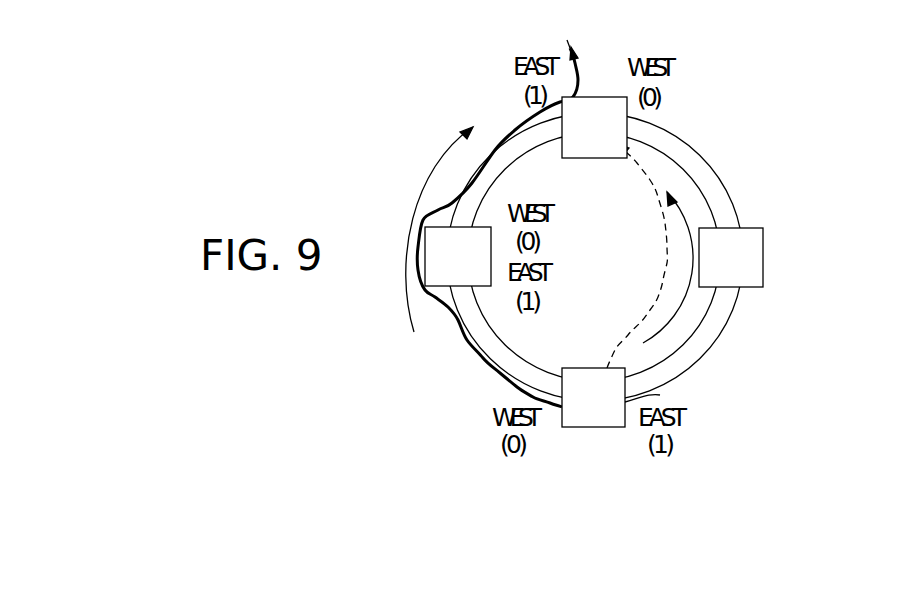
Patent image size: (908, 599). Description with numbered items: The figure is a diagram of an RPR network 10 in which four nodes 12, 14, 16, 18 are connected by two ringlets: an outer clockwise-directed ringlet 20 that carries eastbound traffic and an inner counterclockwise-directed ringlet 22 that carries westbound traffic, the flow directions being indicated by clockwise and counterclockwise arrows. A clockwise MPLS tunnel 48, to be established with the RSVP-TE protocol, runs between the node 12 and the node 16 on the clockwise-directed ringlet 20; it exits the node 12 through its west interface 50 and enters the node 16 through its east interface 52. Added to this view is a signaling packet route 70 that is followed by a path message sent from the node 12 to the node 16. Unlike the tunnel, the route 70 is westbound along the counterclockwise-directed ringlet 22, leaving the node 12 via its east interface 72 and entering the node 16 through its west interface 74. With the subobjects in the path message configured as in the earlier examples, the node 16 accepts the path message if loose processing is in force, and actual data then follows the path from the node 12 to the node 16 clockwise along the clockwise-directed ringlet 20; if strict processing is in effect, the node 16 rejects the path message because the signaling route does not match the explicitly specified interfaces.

The RPR network 10 is at (630, 261).
The node 12 is at (593, 397).
The node 14 is at (458, 256).
The node 16 is at (594, 127).
The node 18 is at (731, 257).
The clockwise-directed ringlet 20 is at (485, 360).
The counterclockwise-directed ringlet 22 is at (683, 355).
The MPLS tunnel 48 is at (455, 327).
The west interface 50 is at (563, 426).
The east interface 52 is at (560, 137).
The signaling packet route 70 is at (657, 295).
The east interface 72 is at (632, 391).
The west interface 74 is at (640, 132).